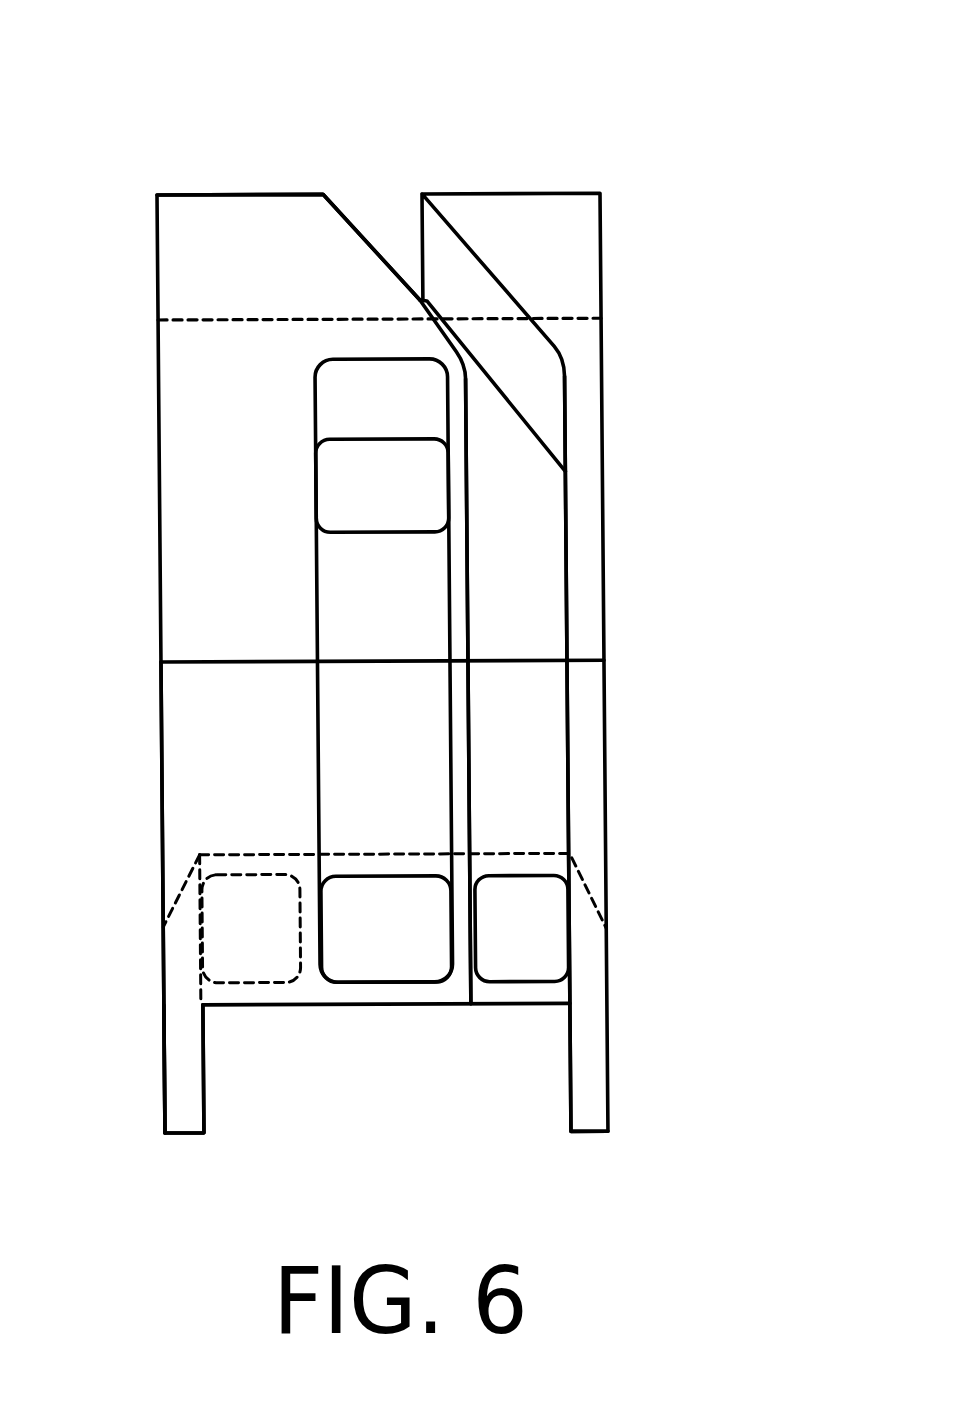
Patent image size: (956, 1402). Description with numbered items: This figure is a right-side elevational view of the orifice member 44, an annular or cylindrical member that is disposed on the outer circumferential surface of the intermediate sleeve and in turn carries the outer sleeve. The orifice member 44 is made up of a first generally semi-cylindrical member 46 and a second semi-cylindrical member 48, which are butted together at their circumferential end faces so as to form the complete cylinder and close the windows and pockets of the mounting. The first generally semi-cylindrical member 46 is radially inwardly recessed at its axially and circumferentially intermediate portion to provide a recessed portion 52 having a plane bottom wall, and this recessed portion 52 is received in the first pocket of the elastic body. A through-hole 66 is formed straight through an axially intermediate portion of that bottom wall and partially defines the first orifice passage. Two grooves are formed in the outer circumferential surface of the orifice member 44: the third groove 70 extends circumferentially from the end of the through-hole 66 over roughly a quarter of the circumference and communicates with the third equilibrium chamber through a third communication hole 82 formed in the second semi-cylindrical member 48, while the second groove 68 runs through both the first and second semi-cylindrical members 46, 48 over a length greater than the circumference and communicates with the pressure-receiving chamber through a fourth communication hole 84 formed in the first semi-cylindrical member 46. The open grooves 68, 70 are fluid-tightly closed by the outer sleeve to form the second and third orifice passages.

The orifice member 44 is at (577, 140).
The second semi-cylindrical member 48 is at (180, 428).
The first generally semi-cylindrical member 46 is at (178, 748).
The third communication hole 82 is at (373, 535).
The second groove 68 is at (567, 492).
The third groove 70 is at (448, 580).
The fourth communication hole 84 is at (198, 868).
The through-hole 66 is at (362, 982).
The recessed portion 52 is at (265, 1007).